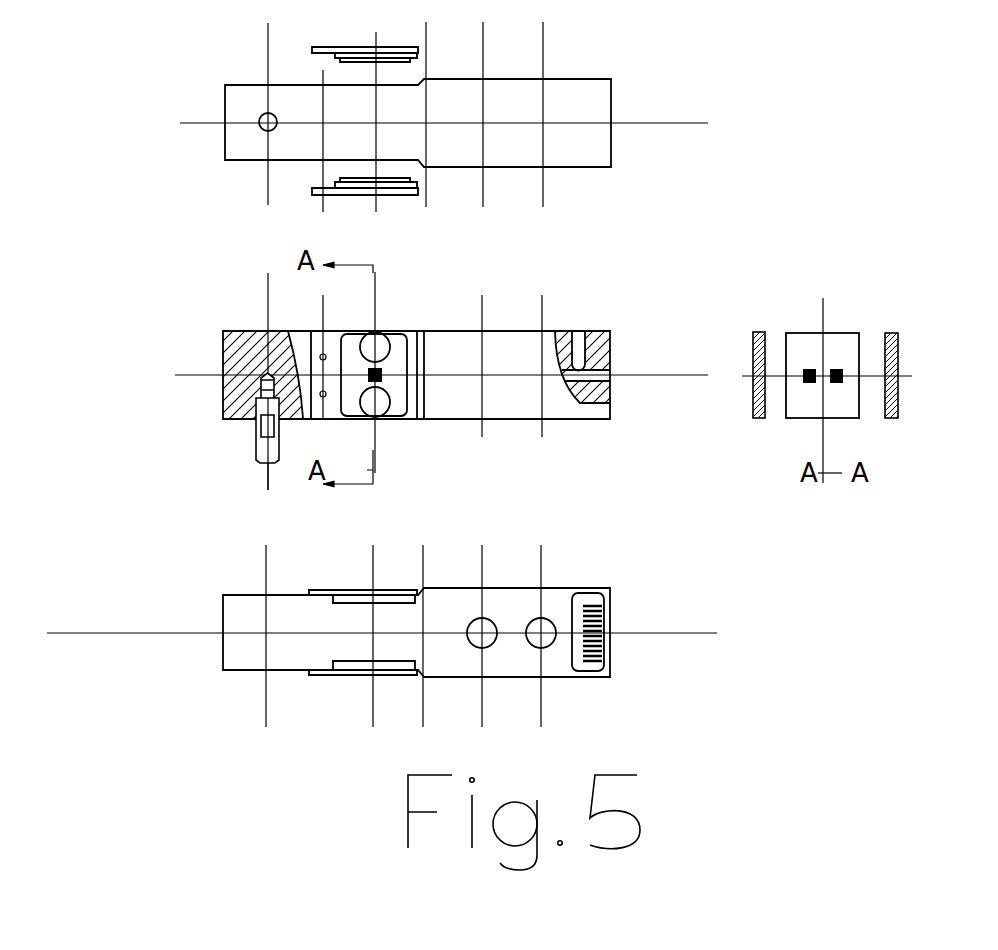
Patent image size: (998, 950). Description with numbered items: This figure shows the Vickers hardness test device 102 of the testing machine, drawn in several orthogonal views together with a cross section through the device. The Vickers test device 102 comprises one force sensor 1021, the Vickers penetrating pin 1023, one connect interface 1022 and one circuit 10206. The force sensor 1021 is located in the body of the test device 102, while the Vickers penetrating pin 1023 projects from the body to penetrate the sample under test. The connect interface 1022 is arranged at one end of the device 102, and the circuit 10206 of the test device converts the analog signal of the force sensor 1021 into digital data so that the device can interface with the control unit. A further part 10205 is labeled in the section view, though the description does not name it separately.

The Vickers test device 102 is at (530, 347).
The force sensor 1021 is at (403, 348).
The connect interface 1022 is at (598, 658).
The Vickers penetrating pin 1023 is at (253, 450).
The side plates (section A-A) 10205 is at (767, 333).
The circuit 10206 is at (885, 410).